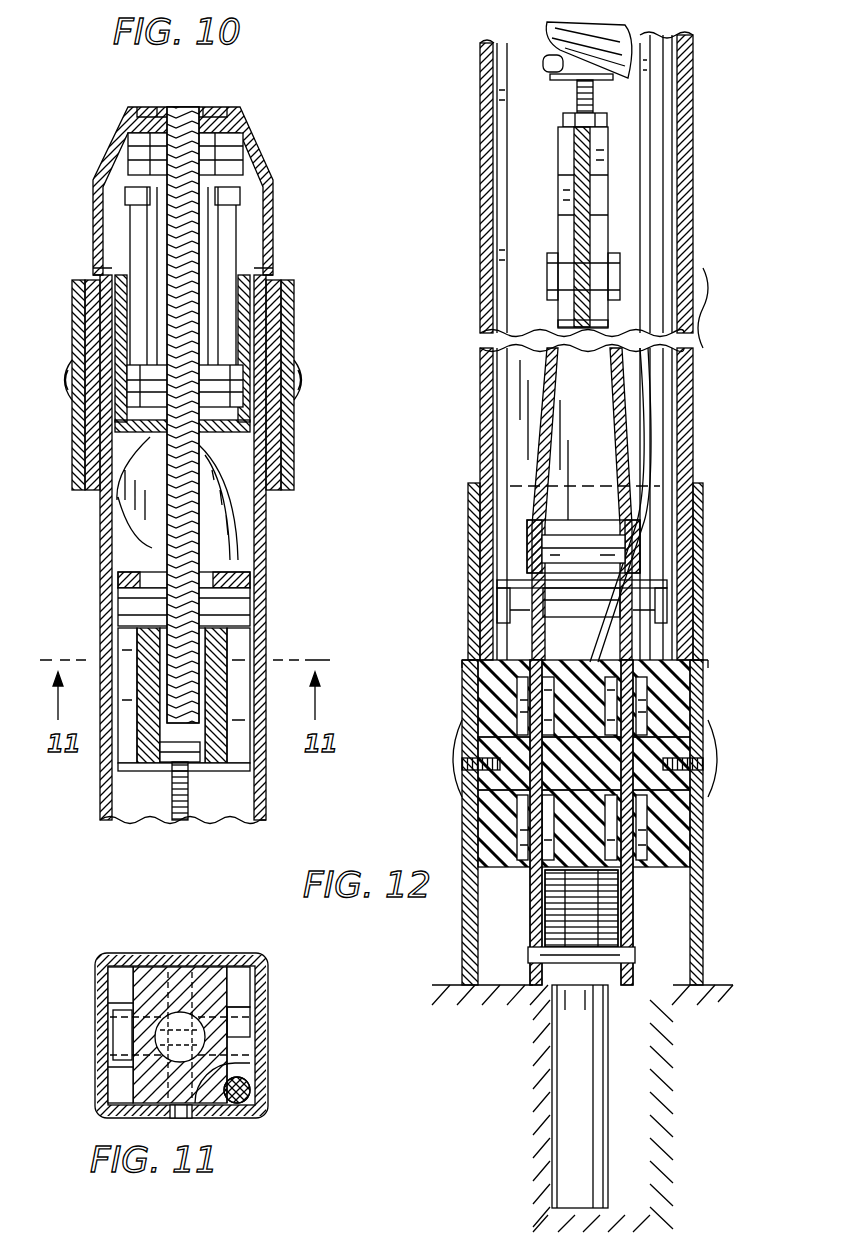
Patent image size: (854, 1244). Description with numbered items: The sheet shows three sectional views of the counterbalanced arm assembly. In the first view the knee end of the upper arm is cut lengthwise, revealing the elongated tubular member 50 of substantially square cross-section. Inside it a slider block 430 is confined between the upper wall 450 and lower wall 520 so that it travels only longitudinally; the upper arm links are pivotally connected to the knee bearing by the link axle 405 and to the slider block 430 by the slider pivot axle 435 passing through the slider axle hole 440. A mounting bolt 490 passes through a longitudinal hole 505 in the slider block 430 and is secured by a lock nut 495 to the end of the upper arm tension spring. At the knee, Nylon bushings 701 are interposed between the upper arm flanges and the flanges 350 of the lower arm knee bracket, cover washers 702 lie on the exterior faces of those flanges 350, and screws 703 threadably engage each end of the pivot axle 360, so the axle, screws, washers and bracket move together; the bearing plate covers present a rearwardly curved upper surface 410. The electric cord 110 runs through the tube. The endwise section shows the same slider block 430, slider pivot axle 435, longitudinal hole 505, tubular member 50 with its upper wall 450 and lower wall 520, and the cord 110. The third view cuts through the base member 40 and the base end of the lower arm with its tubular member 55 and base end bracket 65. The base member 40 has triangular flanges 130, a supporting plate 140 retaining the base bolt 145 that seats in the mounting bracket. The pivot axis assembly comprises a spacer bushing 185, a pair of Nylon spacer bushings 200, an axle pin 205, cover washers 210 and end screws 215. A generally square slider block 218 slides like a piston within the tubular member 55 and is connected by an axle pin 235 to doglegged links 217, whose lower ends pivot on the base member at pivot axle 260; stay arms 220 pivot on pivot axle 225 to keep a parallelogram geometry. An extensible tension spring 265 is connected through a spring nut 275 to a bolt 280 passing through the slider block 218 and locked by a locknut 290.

In FIG. 12, the base member 40 is at (633, 882).
In FIG. 10, the elongated tubular member 50 is at (270, 796).
In FIG. 11, the elongated tubular member 50 is at (268, 1058).
In FIG. 12, the elongated tubular member 55 is at (481, 397).
In FIG. 12, the base end bracket 65 is at (698, 548).
In FIG. 10, the electric cord 110 is at (228, 523).
In FIG. 11, the electric cord 110 is at (250, 1090).
In FIG. 12, the electric cord 110 is at (690, 58).
In FIG. 12, the flanges 130 is at (598, 622).
In FIG. 12, the supporting plate 140 is at (635, 957).
In FIG. 10, the base bolt 145 is at (144, 500).
In FIG. 12, the base bolt 145 is at (590, 1038).
In FIG. 12, the spacer bushing 185 is at (620, 896).
In FIG. 12, the spacer bushings 200 is at (690, 833).
In FIG. 12, the axle pin 205 is at (690, 726).
In FIG. 12, the cover washers 210 is at (465, 662).
In FIG. 12, the end screws 215 is at (453, 782).
In FIG. 12, the doglegged links 217 is at (618, 412).
In FIG. 12, the slider block 218 is at (600, 207).
In FIG. 12, the stay arms 220 is at (500, 443).
In FIG. 12, the pivot axle 225 is at (665, 596).
In FIG. 12, the axle pin 235 is at (618, 270).
In FIG. 12, the pivot axle 260 is at (633, 550).
In FIG. 12, the extensible tension spring 265 is at (547, 30).
In FIG. 12, the spring nut 275 is at (620, 78).
In FIG. 12, the bolt 280 is at (577, 97).
In FIG. 12, the locknut 290 is at (607, 118).
In FIG. 10, the flanges 350 is at (90, 277).
In FIG. 10, the pivot axle 360 is at (215, 365).
In FIG. 10, the link axle 405 is at (235, 154).
In FIG. 10, the rearwardly curved upper surface 410 is at (205, 107).
In FIG. 10, the slider block 430 is at (215, 652).
In FIG. 11, the slider block 430 is at (150, 975).
In FIG. 10, the slider pivot axle 435 is at (235, 590).
In FIG. 11, the slider pivot axle 435 is at (115, 1000).
In FIG. 10, the slider axle hole 440 is at (123, 640).
In FIG. 11, the upper wall 450 is at (210, 958).
In FIG. 10, the mounting bolt 490 is at (168, 805).
In FIG. 10, the lock nut 495 is at (180, 773).
In FIG. 10, the longitudinal hole 505 is at (172, 692).
In FIG. 11, the longitudinal hole 505 is at (200, 1027).
In FIG. 11, the lower wall 520 is at (213, 1117).
In FIG. 10, the bushings 701 is at (270, 280).
In FIG. 10, the cover washers 702 is at (72, 284).
In FIG. 10, the screws 703 is at (66, 380).